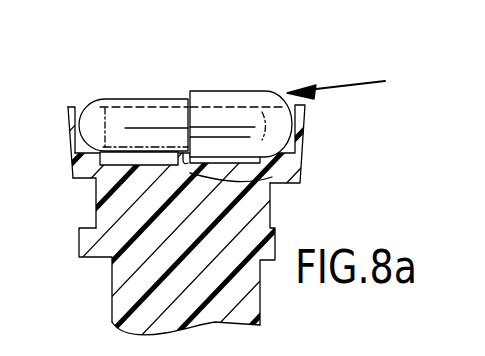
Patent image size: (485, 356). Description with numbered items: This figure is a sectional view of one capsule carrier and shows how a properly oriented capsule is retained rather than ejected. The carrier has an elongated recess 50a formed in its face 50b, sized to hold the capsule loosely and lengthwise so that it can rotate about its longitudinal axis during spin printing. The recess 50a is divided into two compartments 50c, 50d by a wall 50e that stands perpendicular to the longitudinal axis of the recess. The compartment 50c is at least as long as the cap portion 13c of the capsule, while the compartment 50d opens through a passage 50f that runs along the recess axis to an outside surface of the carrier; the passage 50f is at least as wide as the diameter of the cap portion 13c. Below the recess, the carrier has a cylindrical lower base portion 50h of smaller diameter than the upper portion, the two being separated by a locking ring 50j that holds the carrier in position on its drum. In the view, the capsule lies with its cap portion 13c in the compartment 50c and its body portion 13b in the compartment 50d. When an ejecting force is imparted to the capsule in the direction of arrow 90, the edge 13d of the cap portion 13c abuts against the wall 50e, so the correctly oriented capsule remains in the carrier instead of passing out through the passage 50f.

The body portion 13b is at (143, 98).
The cap portion 13c is at (220, 92).
The edge of cap portion 13d is at (188, 93).
The elongated recess 50a is at (135, 165).
The face 50b is at (68, 106).
The compartment 50c is at (305, 122).
The compartment 50d is at (74, 176).
The wall 50e is at (270, 188).
The passage 50f is at (77, 142).
The cylindrical lower base portion 50h is at (260, 280).
The locking ring 50j is at (80, 238).
The arrow 90 is at (328, 87).